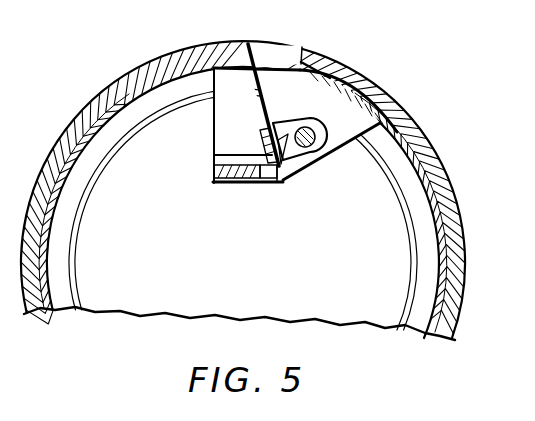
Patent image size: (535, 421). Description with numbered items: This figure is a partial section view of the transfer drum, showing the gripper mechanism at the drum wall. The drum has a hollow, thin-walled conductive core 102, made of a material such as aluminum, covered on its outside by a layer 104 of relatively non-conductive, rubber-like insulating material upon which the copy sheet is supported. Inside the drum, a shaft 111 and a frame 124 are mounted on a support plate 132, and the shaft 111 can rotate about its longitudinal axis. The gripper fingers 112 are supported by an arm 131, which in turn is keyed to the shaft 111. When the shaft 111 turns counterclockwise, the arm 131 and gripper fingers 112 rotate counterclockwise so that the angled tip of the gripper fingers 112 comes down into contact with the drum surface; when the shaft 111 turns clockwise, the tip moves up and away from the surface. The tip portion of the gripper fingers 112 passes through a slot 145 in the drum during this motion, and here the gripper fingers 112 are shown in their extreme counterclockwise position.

The conductive core 102 is at (147, 67).
The layer of insulating material 104 is at (182, 50).
The shaft 111 is at (303, 157).
The gripper fingers 112 is at (257, 95).
The frame 124 is at (244, 176).
The arm 131 is at (309, 119).
The support plate 132 is at (350, 108).
The slot 145 is at (266, 46).